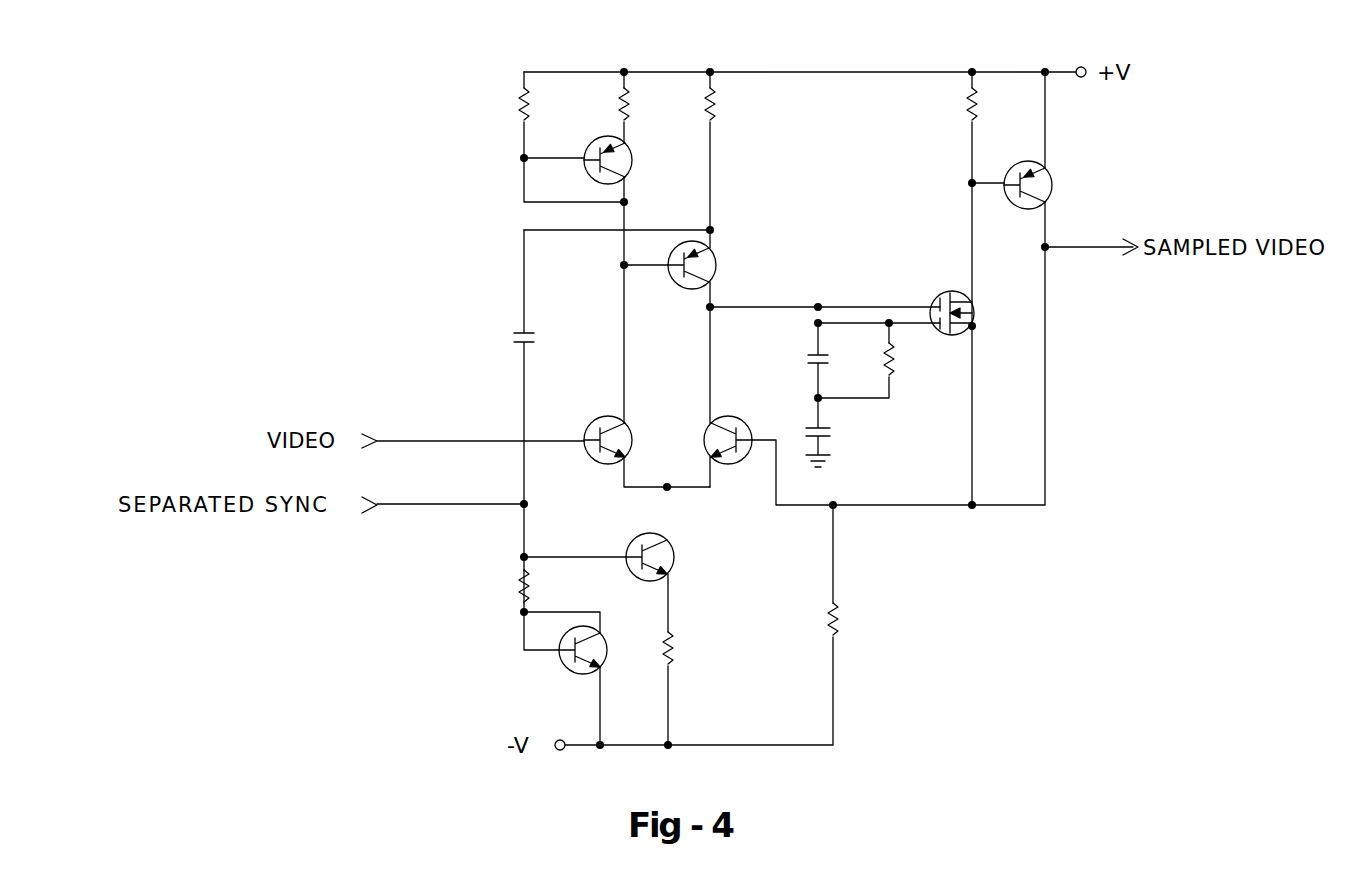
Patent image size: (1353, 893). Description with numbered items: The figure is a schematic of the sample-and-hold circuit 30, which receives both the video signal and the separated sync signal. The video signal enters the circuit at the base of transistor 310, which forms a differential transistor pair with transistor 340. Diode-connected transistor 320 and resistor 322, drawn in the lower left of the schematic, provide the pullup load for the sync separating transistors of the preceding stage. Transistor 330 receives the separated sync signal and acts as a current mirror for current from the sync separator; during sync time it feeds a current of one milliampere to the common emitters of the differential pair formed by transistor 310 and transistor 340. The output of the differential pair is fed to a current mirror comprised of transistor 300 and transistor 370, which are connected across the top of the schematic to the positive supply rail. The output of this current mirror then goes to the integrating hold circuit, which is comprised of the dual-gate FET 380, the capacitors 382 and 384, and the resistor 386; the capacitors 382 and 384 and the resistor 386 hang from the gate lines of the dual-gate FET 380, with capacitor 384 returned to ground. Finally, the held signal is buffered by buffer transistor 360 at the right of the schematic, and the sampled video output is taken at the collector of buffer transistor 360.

The sample-and-hold circuit 30 is at (429, 263).
The transistor 300 is at (633, 153).
The transistor 310 is at (591, 417).
The diode-connected transistor 320 is at (578, 678).
The resistor 322 is at (514, 578).
The transistor 330 is at (675, 548).
The transistor 340 is at (706, 420).
The buffer transistor 360 is at (1053, 190).
The transistor 370 is at (717, 258).
The dual-gate FET 380 is at (979, 316).
The capacitor 382 is at (811, 352).
The capacitor 384 is at (826, 427).
The resistor 386 is at (897, 358).